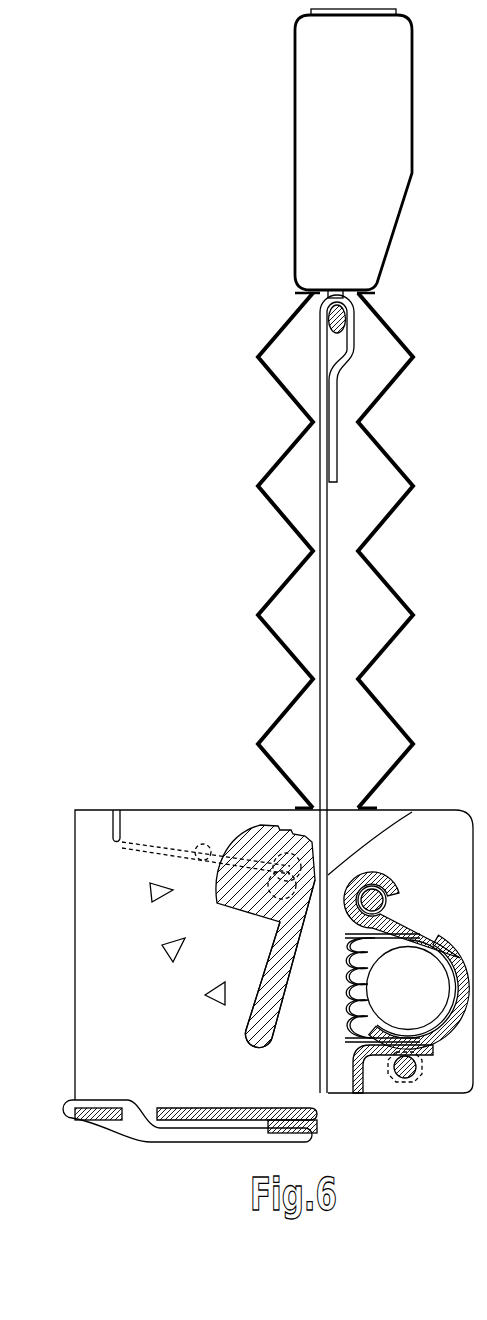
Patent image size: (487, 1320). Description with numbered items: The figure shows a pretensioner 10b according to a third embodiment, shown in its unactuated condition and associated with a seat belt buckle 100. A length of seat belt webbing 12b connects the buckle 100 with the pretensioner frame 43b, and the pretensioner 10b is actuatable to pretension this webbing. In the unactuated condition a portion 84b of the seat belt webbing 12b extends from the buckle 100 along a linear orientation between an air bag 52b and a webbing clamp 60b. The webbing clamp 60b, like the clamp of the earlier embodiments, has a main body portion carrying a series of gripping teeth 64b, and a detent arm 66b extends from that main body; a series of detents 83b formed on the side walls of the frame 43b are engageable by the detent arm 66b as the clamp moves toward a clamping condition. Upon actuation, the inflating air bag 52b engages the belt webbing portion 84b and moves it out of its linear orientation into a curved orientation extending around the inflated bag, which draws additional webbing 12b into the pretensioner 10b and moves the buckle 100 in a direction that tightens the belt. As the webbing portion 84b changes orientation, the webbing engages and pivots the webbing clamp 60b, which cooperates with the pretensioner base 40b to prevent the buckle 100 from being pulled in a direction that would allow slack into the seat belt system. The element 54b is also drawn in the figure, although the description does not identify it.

The seat belt buckle 100 is at (417, 150).
The seat belt webbing 12b is at (327, 612).
The pretensioner 10b is at (138, 783).
The pretensioner frame 43b is at (73, 824).
The webbing clamp 60b is at (243, 925).
The gripping teeth 64b is at (280, 828).
The detent arm 66b is at (247, 1028).
The detents 83b is at (152, 888).
The belt webbing portion 84b is at (412, 812).
The pretensioner base 40b is at (383, 876).
The air bag 52b is at (353, 1042).
The roller 54b is at (418, 1008).